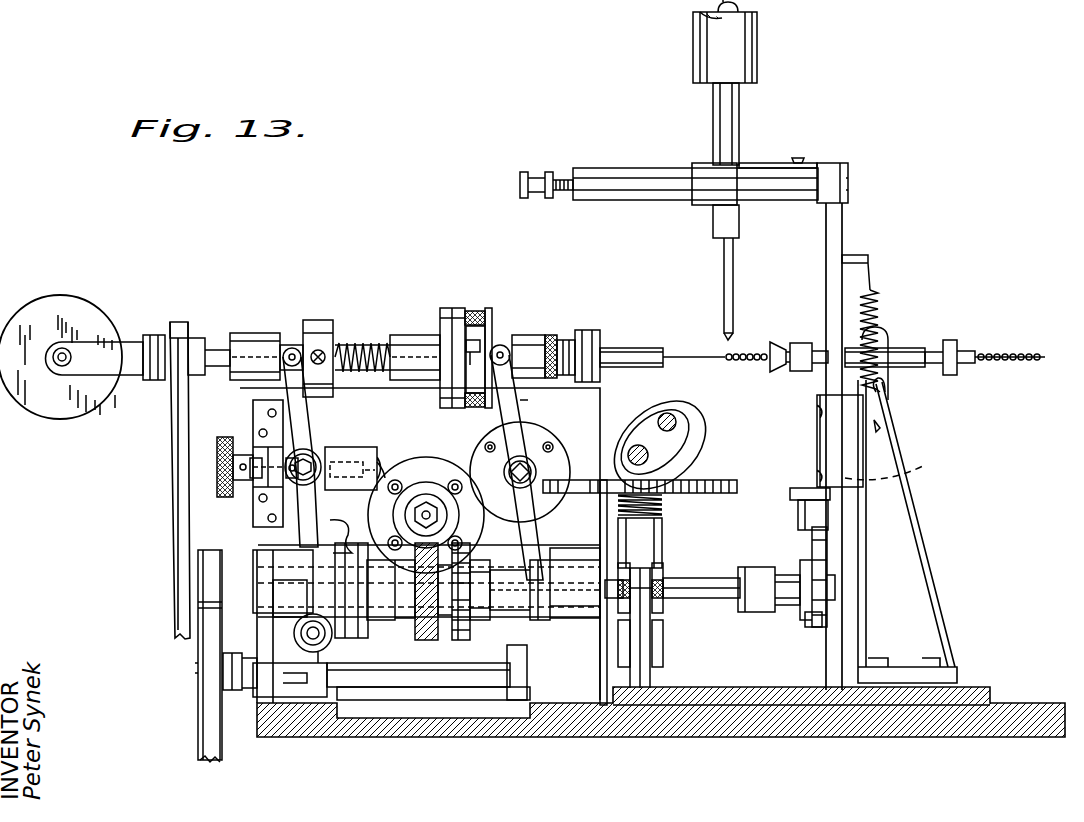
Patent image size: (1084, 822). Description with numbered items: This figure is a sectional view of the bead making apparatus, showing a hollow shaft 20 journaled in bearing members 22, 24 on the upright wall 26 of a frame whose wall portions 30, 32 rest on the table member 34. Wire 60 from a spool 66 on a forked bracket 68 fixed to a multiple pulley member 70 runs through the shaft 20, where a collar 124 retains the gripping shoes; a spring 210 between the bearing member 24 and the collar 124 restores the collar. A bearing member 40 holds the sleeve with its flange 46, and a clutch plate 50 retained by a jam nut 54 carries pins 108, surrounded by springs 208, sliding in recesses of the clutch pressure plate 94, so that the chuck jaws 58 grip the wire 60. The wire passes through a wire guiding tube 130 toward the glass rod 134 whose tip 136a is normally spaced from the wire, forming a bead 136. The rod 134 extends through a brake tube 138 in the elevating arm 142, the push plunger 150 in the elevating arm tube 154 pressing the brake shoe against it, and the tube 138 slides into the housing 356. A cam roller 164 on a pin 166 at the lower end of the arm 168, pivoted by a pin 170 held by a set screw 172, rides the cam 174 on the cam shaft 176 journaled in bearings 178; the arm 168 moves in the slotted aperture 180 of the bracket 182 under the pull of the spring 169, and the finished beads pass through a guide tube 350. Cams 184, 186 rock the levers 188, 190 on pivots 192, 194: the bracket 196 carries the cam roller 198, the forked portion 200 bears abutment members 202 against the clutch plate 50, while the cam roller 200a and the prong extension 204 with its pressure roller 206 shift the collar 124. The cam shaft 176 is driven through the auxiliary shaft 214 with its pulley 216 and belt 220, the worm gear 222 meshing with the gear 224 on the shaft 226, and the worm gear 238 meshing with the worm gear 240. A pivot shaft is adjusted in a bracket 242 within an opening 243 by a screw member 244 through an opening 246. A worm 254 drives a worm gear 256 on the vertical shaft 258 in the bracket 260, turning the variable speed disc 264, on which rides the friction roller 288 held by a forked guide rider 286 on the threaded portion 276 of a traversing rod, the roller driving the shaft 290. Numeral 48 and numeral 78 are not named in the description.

The hollow shaft 20 is at (213, 348).
The bearing member 22 is at (240, 333).
The bearing member 24 is at (407, 335).
The upright wall 26 is at (420, 544).
The wall portion 30 is at (265, 675).
The wall portion 32 is at (605, 702).
The table member 34 is at (712, 735).
The bearing member 40 is at (530, 340).
The flange 46 is at (567, 340).
The collar ring 48 is at (552, 335).
The clutch plate 50 is at (493, 318).
The jam nut 54 is at (468, 340).
The chuck jaws 58 is at (590, 338).
The wire 60 is at (675, 357).
The spool 66 is at (48, 300).
The forked bracket 68 is at (130, 345).
The multiple pulley member 70 is at (185, 322).
The plate 78 is at (178, 450).
The clutch pressure plate 94 is at (445, 308).
The pins 108 is at (478, 408).
The collar 124 is at (322, 320).
The wire guiding tube 130 is at (658, 338).
The glass rod 134 is at (736, 270).
The bead 136 is at (735, 334).
The tip 136a is at (987, 355).
The brake tube 138 is at (742, 125).
The elevating arm 142 is at (782, 162).
The push plunger 150 is at (545, 172).
The elevating arm tube 154 is at (628, 168).
The cam roller 164 is at (812, 497).
The pin 166 is at (798, 516).
The arm 168 is at (845, 233).
The spring 169 is at (880, 298).
The pin 170 is at (850, 192).
The set screw 172 is at (805, 158).
The cam 174 is at (817, 627).
The cam shaft 176 is at (835, 590).
The bearings 178 is at (752, 567).
The slotted aperture 180 is at (912, 470).
The bracket 182 is at (914, 520).
The cam 184 is at (470, 583).
The cam 186 is at (362, 622).
The lever 188 is at (528, 420).
The lever 190 is at (306, 418).
The pivot 192 is at (540, 470).
The pivot 194 is at (320, 458).
The bracket 196 is at (520, 615).
The cam roller 198 is at (480, 620).
The forked portion 200 is at (530, 400).
The cam roller 200a is at (347, 548).
The abutment members 202 is at (506, 345).
The prong extension 204 is at (290, 343).
The pressure roller 206 is at (292, 348).
The springs 208 is at (475, 311).
The spring 210 is at (360, 343).
The auxiliary shaft 214 is at (420, 690).
The pulley 216 is at (198, 655).
The belt 220 is at (212, 748).
The worm gear 222 is at (330, 670).
The gear 224 is at (322, 672).
The shaft 226 is at (295, 628).
The worm gear 238 is at (440, 478).
The worm gear 240 is at (425, 640).
The bracket 242 is at (375, 452).
The opening 243 is at (385, 463).
The screw member 244 is at (232, 452).
The opening 246 is at (262, 492).
The worm 254 is at (662, 582).
The worm gear 256 is at (665, 588).
The vertical shaft 258 is at (655, 612).
The bracket 260 is at (645, 542).
The variable speed disc 264 is at (728, 480).
The threaded portion 276 is at (672, 415).
The forked guide rider 286 is at (678, 435).
The friction roller 288 is at (690, 470).
The shaft 290 is at (638, 446).
The guide tube 350 is at (902, 348).
The housing 356 is at (758, 42).